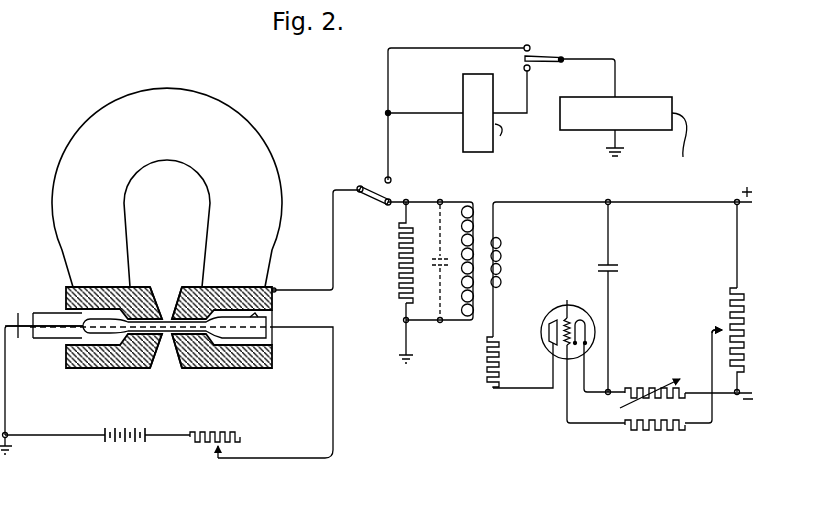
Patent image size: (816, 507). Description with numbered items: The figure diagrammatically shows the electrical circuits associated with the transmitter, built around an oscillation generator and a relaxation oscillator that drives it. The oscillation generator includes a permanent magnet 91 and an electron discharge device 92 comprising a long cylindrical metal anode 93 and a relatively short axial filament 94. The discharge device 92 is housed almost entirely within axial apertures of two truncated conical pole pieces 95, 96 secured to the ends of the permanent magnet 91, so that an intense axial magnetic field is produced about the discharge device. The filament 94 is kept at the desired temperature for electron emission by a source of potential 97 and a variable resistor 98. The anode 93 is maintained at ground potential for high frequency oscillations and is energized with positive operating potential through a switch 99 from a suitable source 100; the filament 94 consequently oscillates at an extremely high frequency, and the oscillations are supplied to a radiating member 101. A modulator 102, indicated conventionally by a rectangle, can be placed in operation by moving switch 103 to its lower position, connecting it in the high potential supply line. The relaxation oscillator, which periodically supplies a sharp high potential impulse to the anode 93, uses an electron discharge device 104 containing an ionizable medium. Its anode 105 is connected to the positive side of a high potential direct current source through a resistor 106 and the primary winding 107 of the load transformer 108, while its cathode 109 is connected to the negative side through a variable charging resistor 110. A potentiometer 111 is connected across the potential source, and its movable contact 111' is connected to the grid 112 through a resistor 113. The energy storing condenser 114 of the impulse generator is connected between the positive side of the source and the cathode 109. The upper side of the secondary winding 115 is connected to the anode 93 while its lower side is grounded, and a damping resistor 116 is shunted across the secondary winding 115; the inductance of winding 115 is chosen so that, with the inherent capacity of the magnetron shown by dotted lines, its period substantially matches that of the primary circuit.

The permanent magnet 91 is at (68, 157).
The electron discharge device 92 is at (268, 338).
The cylindrical metal anode 93 is at (163, 318).
The axial filament 94 is at (169, 334).
The truncated conical pole piece 95 is at (73, 297).
The truncated conical pole piece 96 is at (264, 288).
The source of potential 97 is at (125, 443).
The variable resistor 98 is at (213, 431).
The switch 99 is at (365, 184).
The source of positive potential 100 is at (601, 135).
The radiating member 101 is at (27, 330).
The modulator 102 is at (521, 113).
The switch 103 is at (546, 53).
The electron discharge device 104 is at (548, 320).
The anode 105 is at (548, 333).
The resistor 106 is at (488, 378).
The primary winding 107 is at (502, 250).
The load transformer 108 is at (481, 230).
The cathode 109 is at (590, 340).
The variable charging resistor 110 is at (660, 386).
The potentiometer 111 is at (723, 331).
The movable contact 111' is at (708, 325).
The grid 112 is at (567, 318).
The resistor 113 is at (652, 432).
The energy storing condenser 114 is at (620, 268).
The secondary winding 115 is at (463, 300).
The damping resistor 116 is at (400, 266).